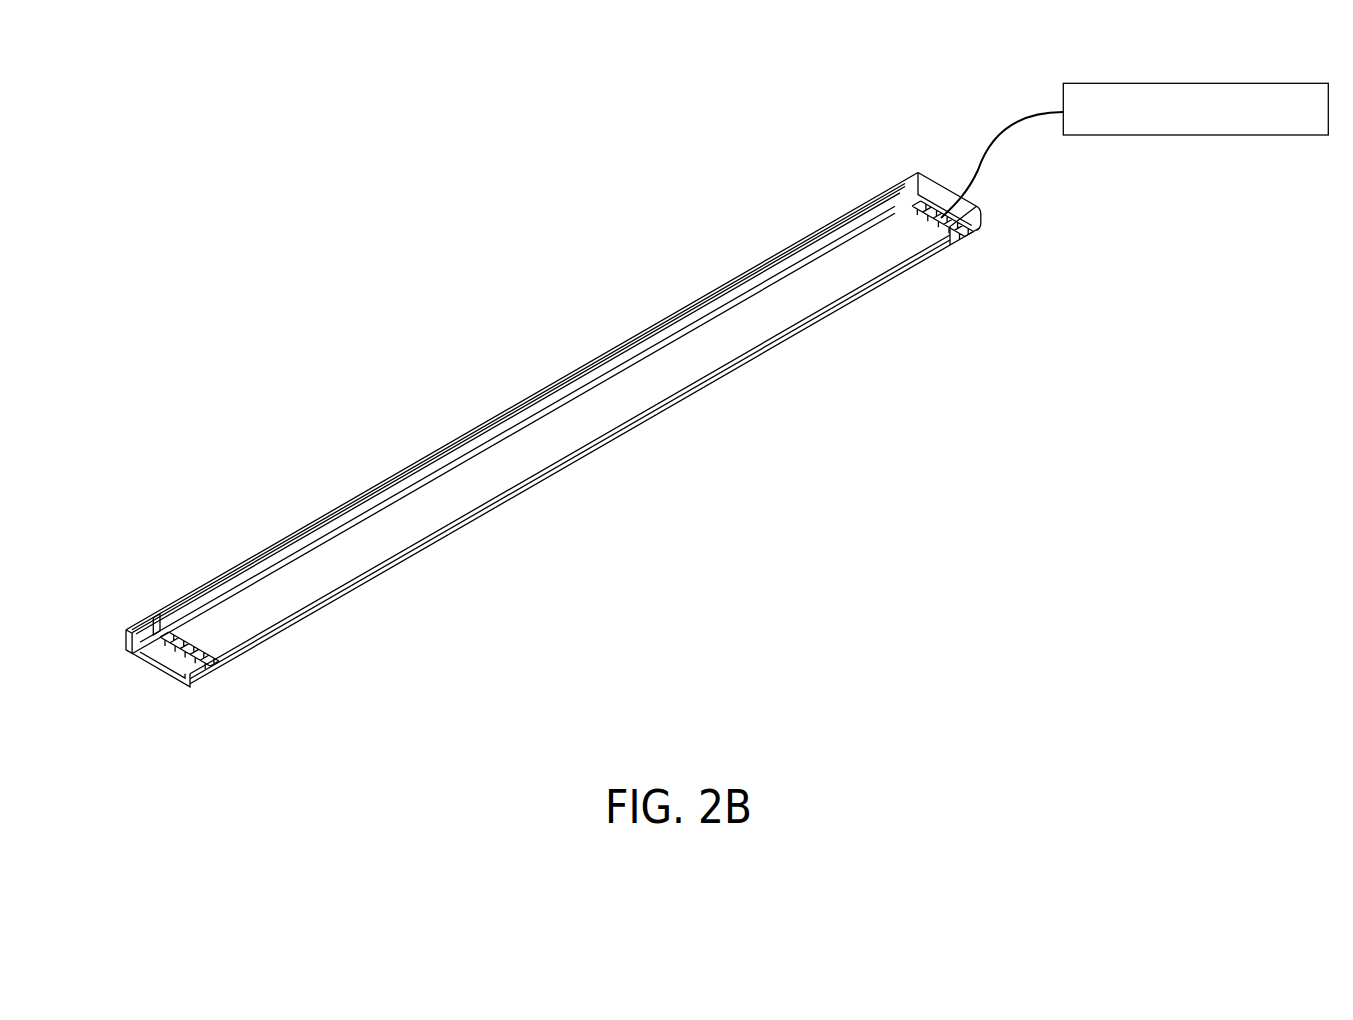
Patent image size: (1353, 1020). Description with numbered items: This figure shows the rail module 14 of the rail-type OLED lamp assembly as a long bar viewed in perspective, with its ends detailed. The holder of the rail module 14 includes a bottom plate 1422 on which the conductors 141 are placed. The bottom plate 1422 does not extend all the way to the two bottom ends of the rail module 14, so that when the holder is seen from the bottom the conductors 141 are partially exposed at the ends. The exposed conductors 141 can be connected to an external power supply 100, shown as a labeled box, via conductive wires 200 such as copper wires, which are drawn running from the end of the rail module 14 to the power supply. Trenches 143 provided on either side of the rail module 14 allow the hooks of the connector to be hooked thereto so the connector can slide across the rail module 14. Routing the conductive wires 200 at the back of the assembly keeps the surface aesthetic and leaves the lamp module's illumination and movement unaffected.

The rail module 14 is at (160, 162).
The external power supply 100 is at (1138, 83).
The conductive wires 200 is at (980, 167).
The conductors 141 is at (957, 231).
The bottom plate 1422 is at (900, 256).
The trenches 143 is at (170, 620).